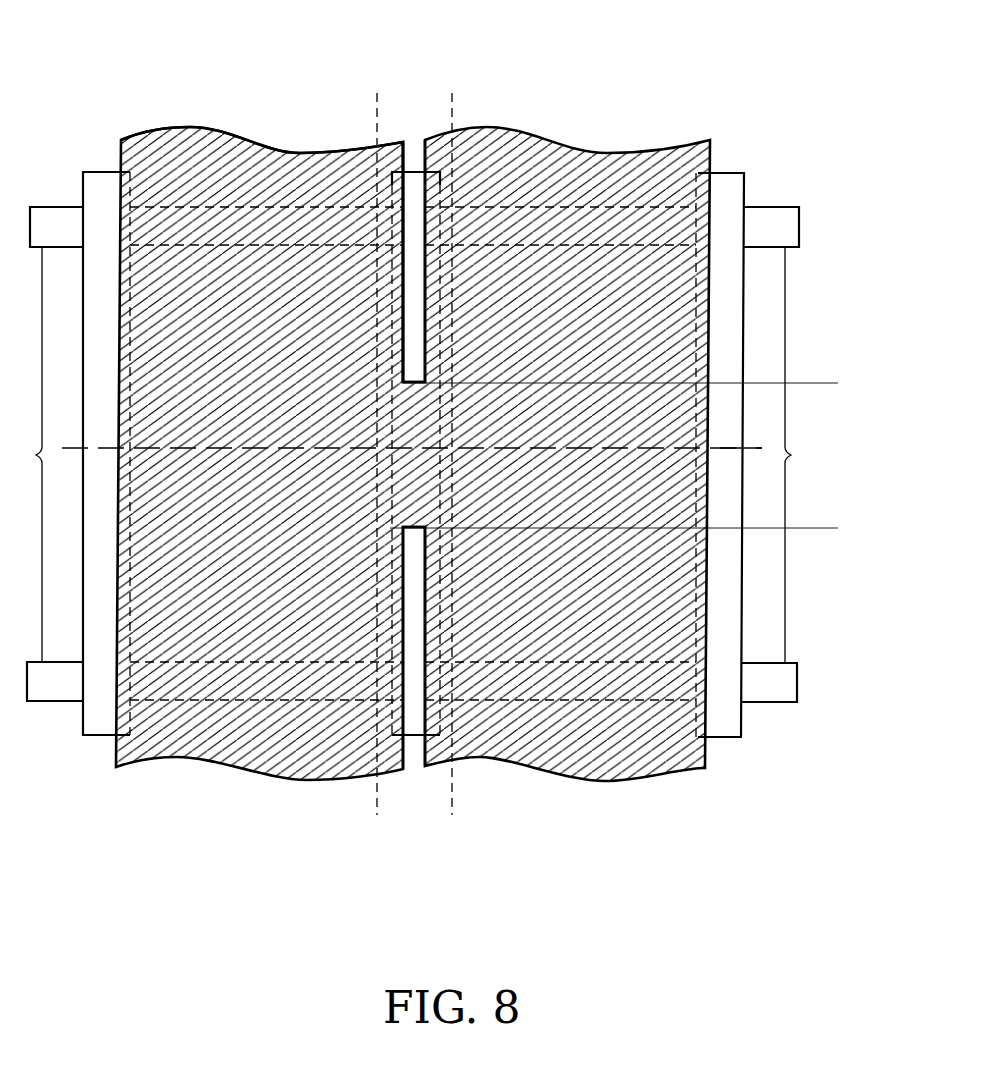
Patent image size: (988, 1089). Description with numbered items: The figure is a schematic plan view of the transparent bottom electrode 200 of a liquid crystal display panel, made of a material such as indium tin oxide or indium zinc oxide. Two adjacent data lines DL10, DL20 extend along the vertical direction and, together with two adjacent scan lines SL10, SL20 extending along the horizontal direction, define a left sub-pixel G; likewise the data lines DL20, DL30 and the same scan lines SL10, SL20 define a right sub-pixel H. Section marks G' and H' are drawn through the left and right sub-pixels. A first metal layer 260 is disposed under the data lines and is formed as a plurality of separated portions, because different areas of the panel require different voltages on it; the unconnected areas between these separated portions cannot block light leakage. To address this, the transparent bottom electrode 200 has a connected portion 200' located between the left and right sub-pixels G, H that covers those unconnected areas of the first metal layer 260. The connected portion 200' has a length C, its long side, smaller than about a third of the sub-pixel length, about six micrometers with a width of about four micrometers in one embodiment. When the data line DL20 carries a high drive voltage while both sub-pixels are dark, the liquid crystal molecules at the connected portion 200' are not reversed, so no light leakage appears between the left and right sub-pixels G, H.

The transparent bottom electrode 200 is at (412, 436).
The connected portion 200' is at (262, 246).
The first metal layer 260 is at (418, 178).
The data line DL10 is at (97, 742).
The data line DL20 is at (410, 742).
The data line DL30 is at (722, 745).
The scan line SL10 is at (806, 228).
The scan line SL20 is at (806, 683).
The left sub-pixel G is at (26, 455).
The section line G' is at (408, 433).
The right sub-pixel H is at (801, 455).
The section line H' is at (749, 433).
The length c C is at (831, 383).